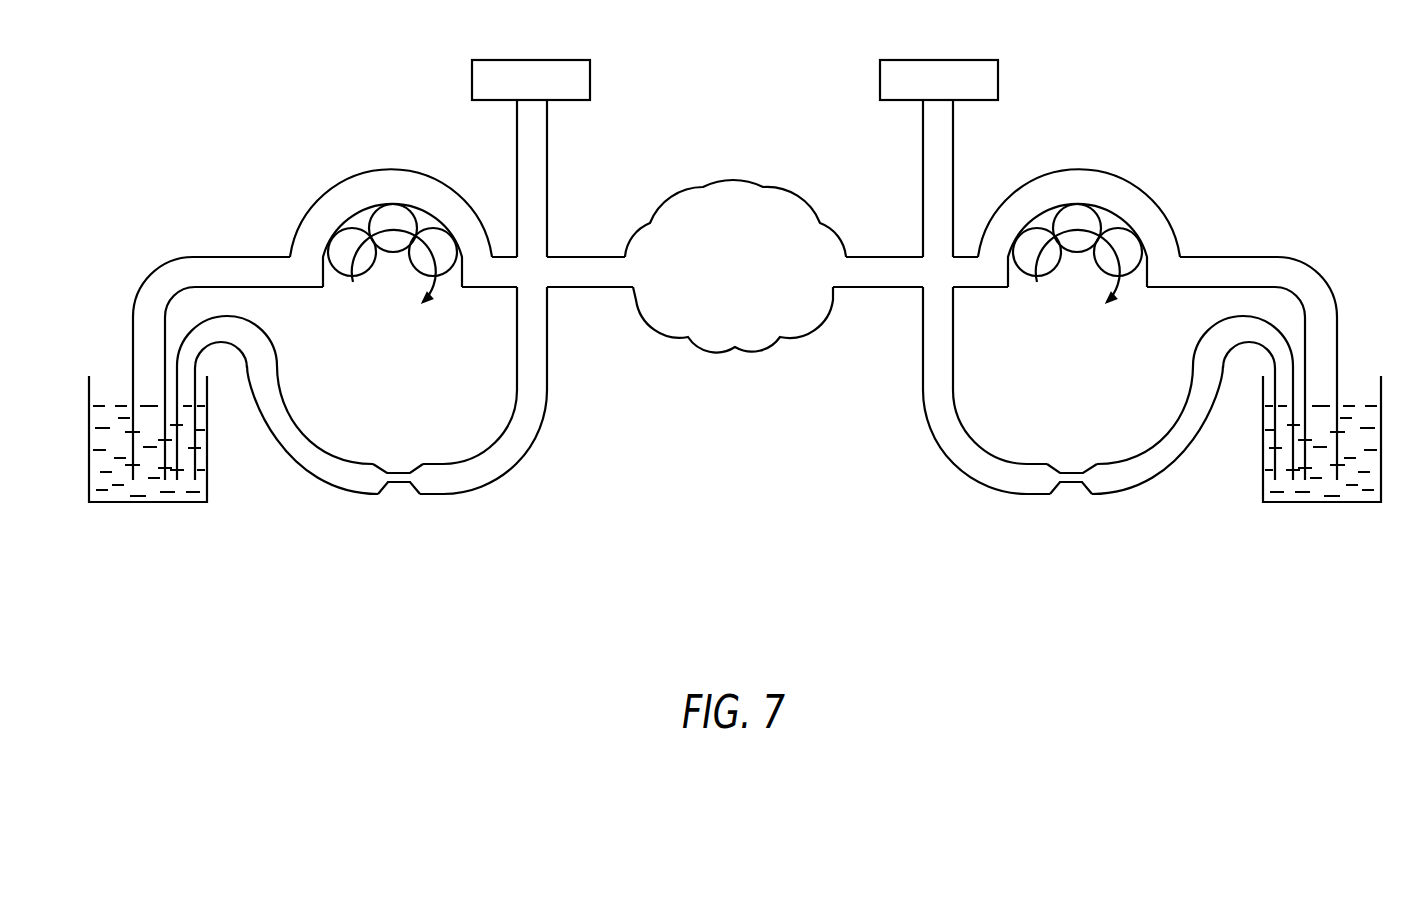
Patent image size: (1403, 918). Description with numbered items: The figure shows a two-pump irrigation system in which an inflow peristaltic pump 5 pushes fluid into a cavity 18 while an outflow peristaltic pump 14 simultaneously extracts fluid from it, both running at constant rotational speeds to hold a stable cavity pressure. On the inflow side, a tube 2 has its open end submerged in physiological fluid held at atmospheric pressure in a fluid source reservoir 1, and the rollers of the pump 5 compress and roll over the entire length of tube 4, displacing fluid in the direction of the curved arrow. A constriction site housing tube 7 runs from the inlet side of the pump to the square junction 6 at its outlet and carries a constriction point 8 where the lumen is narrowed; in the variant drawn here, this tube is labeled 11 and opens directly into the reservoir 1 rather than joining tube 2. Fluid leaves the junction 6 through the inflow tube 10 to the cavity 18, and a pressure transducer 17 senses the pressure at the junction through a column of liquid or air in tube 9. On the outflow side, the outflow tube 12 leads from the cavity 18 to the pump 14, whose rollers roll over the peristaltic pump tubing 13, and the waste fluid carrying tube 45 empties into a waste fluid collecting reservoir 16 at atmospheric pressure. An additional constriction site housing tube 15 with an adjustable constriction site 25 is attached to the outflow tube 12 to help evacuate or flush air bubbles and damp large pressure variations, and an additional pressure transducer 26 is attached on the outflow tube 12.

The fluid source reservoir 1 is at (148, 502).
The tube 2 is at (152, 262).
The tube 4 is at (311, 205).
The inflow peristaltic pump 5 is at (351, 177).
The square junction 6 is at (528, 270).
The constriction site housing tube 7 is at (503, 470).
The constriction point 8 is at (397, 482).
The tube 9 is at (547, 159).
The inflow tube 10 is at (615, 288).
The tube 11 is at (220, 360).
The outflow tube 12 is at (923, 292).
The peristaltic pump tubing 13 is at (1084, 170).
The outflow peristaltic pump 14 is at (1139, 182).
The constriction site housing tube 15 is at (923, 432).
The waste fluid collecting reservoir 16 is at (1313, 503).
The pressure transducer 17 is at (531, 60).
The cavity 18 is at (741, 180).
The constriction site 25 is at (1073, 482).
The pressure transducer 26 is at (957, 60).
The waste fluid carrying tube 45 is at (1322, 277).